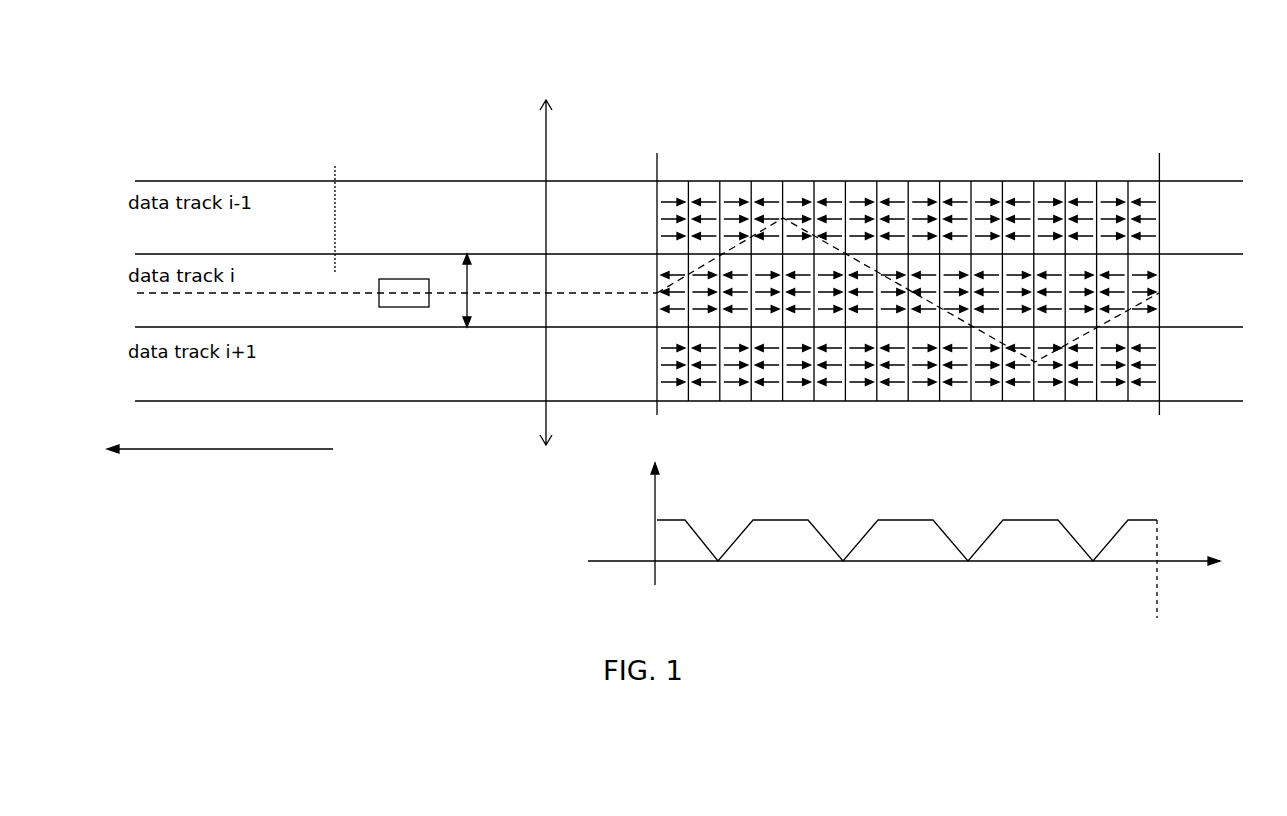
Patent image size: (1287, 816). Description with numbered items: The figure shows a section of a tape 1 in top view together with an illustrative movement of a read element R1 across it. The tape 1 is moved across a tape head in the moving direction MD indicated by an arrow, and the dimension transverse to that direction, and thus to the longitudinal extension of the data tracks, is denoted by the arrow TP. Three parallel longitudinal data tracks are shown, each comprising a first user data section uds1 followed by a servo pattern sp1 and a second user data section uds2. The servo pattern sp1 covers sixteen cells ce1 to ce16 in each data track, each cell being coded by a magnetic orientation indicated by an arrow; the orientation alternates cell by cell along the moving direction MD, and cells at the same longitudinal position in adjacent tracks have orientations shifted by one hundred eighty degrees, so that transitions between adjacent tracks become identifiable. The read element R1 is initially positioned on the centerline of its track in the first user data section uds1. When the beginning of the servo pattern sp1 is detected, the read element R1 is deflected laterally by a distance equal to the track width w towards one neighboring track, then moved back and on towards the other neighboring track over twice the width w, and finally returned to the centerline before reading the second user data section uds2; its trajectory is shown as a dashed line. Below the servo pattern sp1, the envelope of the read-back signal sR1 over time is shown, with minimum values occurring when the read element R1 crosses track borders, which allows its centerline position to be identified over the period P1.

The tape 1 is at (495, 138).
The first user data section uds1 is at (380, 365).
The second user data section uds2 is at (1212, 363).
The first cell ce1 is at (673, 190).
The sixteenth cell ce16 is at (1142, 188).
The servo pattern sp1 is at (962, 382).
The read element R1 is at (405, 307).
The transverse position TP is at (567, 272).
The width w is at (486, 290).
The moving direction MD is at (220, 470).
The read-back signal envelope sR1 is at (904, 536).
The period of read signal P1 is at (1159, 603).